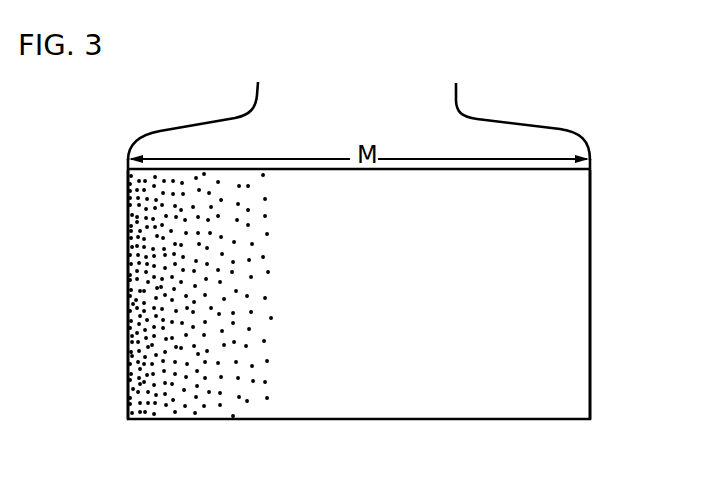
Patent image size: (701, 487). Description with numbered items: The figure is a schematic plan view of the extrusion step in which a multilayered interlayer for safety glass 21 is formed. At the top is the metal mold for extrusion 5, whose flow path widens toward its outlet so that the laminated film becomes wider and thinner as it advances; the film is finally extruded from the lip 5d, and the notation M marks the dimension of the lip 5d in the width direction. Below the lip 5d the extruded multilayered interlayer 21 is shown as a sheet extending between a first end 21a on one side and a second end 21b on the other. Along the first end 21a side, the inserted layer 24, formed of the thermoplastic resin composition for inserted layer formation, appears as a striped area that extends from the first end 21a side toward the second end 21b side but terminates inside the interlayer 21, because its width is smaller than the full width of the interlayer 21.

The metal mold for extrusion 5 is at (506, 118).
The lip 5d is at (530, 170).
The multilayered interlayer for safety glass 21 is at (495, 395).
The first end 21a is at (127, 342).
The second end 21b is at (590, 338).
The inserted layer 24 is at (161, 385).